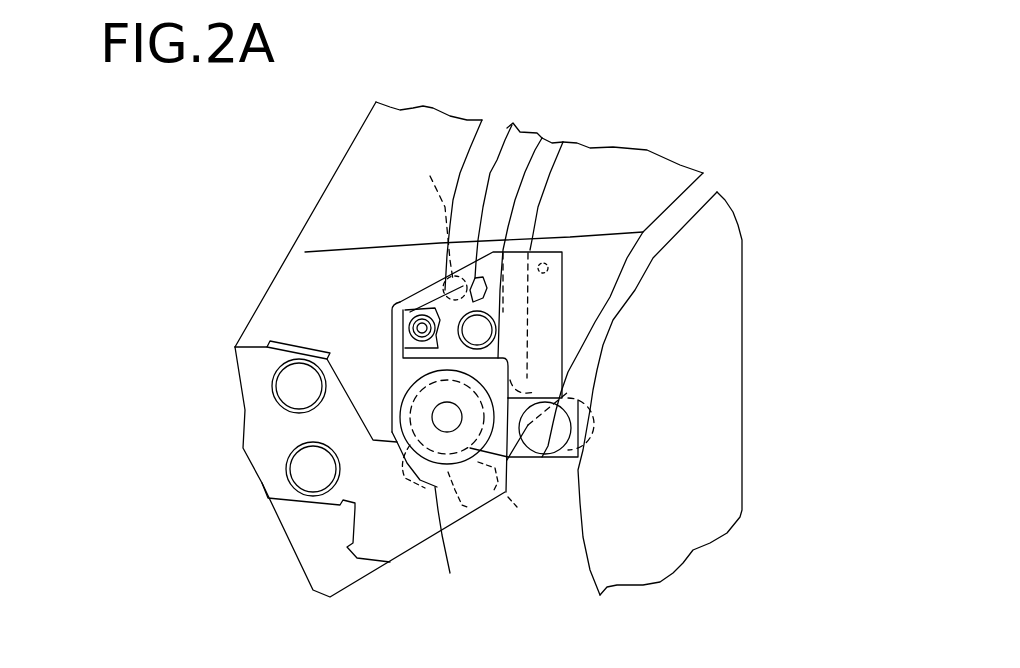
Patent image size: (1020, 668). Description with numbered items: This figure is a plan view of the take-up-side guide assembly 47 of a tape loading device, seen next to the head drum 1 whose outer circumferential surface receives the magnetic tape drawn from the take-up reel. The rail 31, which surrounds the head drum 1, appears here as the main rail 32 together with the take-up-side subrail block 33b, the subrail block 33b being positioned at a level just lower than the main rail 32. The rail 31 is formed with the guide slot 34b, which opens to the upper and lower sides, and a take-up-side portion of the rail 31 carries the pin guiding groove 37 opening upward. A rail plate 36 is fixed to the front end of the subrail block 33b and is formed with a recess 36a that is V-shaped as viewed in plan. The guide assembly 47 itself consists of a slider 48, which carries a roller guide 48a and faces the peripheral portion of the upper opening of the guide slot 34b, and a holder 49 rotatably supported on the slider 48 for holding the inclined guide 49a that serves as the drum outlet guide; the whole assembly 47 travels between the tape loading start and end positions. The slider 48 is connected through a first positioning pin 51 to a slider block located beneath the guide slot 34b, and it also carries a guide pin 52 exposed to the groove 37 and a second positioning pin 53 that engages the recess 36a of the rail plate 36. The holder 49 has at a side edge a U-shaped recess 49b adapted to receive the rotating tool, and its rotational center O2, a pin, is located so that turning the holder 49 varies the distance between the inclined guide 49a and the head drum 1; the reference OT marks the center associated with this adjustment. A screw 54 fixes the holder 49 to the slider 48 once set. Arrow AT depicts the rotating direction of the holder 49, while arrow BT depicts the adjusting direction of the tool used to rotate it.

The head drum 1 is at (720, 243).
The rail 31 is at (272, 222).
The main rail 32 is at (358, 164).
The subrail block 33b is at (268, 312).
The guide slot 34b is at (500, 141).
The rail plate 36 is at (390, 550).
The recess 36a is at (450, 526).
The pin guiding groove 37 is at (545, 158).
The guide assembly 47 is at (372, 374).
The slider 48 is at (393, 397).
The roller guide 48a is at (677, 473).
The holder 49 is at (555, 316).
The inclined guide 49a is at (575, 407).
The U-shaped recess 49b is at (400, 329).
The first positioning pin 51 is at (450, 226).
The guide pin 52 is at (513, 367).
The second positioning pin 53 is at (465, 525).
The screw 54 is at (560, 292).
The rotation center OT is at (426, 290).
The rotational center O2 is at (548, 263).
The adjusting direction arrow BT is at (410, 266).
The rotating direction arrow AT is at (637, 515).